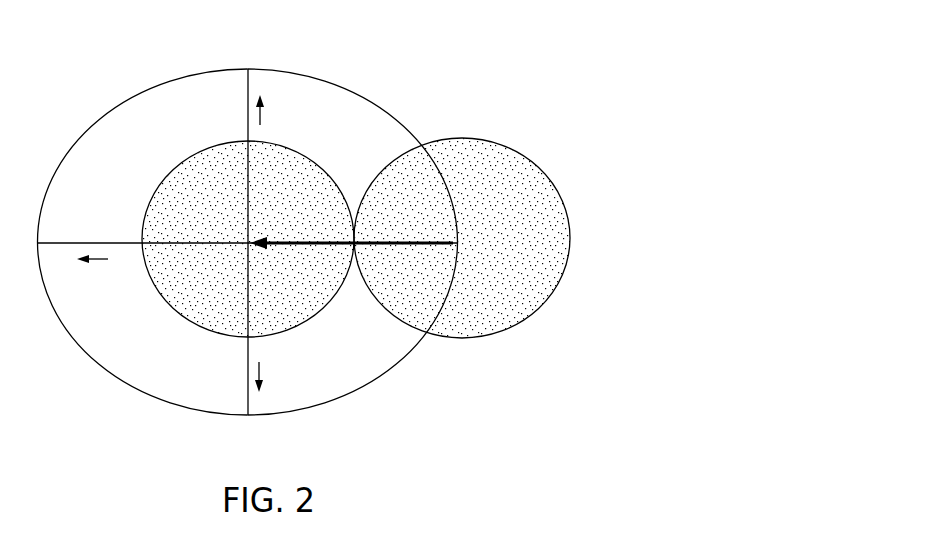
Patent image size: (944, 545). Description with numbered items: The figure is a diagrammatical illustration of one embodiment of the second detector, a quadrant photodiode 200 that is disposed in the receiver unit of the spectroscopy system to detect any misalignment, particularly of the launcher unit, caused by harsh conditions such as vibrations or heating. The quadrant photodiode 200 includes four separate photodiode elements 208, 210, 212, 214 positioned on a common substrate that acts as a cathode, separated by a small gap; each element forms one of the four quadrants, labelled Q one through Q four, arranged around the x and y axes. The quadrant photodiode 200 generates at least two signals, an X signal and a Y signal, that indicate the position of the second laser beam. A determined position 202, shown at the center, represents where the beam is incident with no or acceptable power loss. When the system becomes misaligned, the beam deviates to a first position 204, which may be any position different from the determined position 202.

The quadrant photodiode 200 is at (554, 47).
The determined position 202 is at (203, 157).
The first position 204 is at (548, 189).
The photodiode element 208 is at (375, 113).
The photodiode element 210 is at (113, 117).
The photodiode element 212 is at (112, 367).
The photodiode element 214 is at (380, 373).